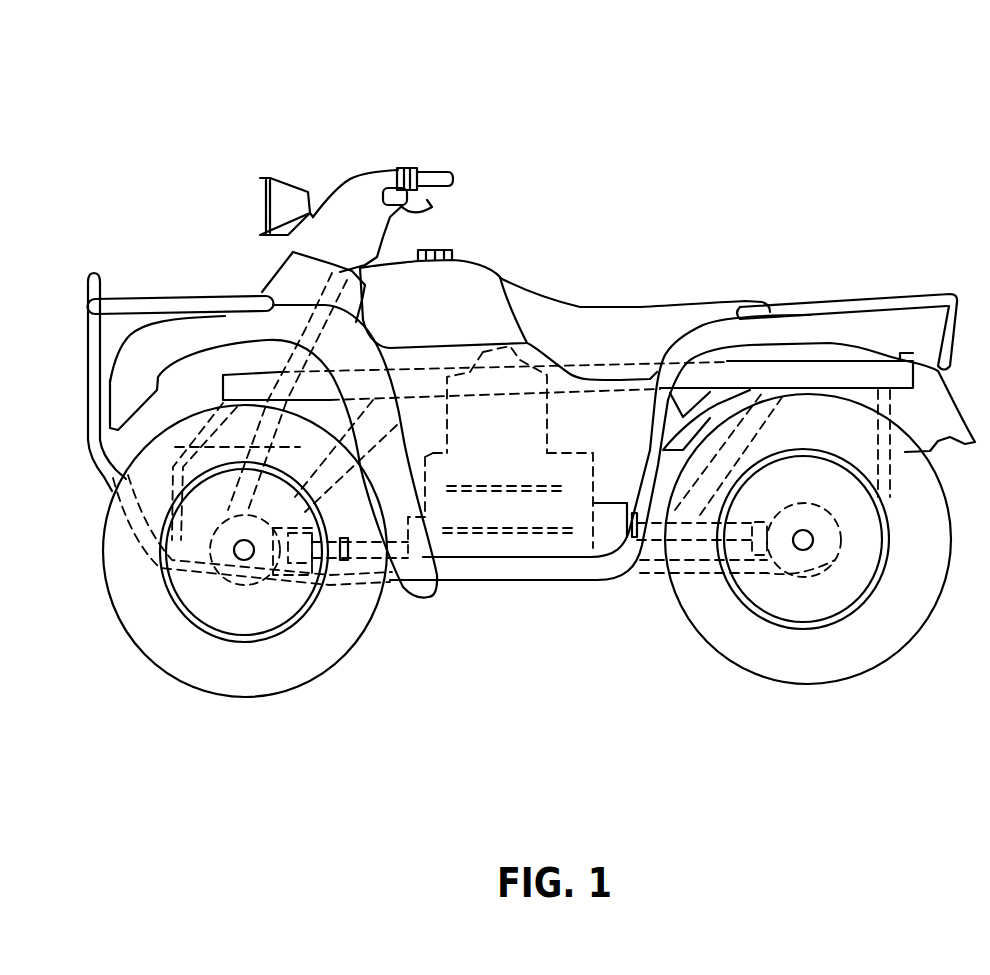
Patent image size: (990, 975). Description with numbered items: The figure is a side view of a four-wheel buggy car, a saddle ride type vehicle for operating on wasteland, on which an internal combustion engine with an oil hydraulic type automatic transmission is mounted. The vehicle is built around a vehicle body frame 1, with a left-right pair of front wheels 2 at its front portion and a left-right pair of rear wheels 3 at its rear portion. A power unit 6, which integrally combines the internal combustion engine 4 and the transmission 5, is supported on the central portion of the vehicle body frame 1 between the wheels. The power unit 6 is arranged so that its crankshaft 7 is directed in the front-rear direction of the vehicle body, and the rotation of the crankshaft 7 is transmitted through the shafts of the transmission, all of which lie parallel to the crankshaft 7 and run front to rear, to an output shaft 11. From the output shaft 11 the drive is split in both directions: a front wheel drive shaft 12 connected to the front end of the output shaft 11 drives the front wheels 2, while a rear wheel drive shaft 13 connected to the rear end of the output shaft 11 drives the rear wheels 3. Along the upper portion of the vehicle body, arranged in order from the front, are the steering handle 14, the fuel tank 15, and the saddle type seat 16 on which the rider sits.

The vehicle body frame 1 is at (788, 373).
The front wheels 2 is at (232, 685).
The rear wheels 3 is at (828, 665).
The internal combustion engine 4 is at (487, 407).
The transmission 5 is at (572, 456).
The power unit 6 is at (693, 56).
The crankshaft 7 is at (482, 492).
The output shaft 11 is at (538, 532).
The front wheel drive shaft 12 is at (341, 545).
The rear wheel drive shaft 13 is at (693, 530).
The steering handle 14 is at (428, 165).
The fuel tank 15 is at (480, 261).
The saddle type seat 16 is at (693, 307).